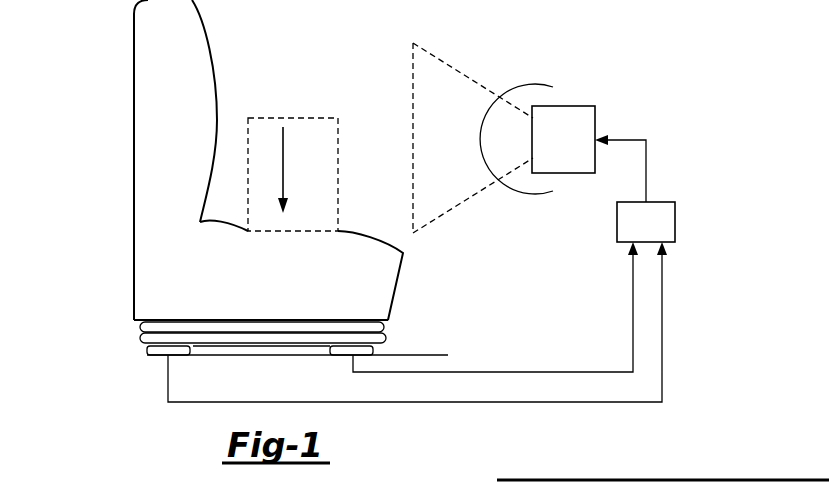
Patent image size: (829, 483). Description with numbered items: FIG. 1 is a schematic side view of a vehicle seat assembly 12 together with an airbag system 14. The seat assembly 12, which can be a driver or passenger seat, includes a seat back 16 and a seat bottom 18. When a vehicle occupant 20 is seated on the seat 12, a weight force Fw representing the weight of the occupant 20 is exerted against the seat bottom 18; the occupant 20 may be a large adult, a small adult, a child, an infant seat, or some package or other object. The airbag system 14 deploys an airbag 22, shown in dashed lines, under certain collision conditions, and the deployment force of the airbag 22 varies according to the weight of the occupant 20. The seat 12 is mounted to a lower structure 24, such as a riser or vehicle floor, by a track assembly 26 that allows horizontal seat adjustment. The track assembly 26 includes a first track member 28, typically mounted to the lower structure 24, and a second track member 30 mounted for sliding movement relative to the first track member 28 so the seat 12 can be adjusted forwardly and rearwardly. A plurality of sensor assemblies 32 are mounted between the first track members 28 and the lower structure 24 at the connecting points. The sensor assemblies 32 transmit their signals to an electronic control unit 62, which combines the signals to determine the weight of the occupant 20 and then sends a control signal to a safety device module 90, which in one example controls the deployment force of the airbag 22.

The vehicle seat assembly 12 is at (70, 183).
The airbag system 14 is at (492, 55).
The seat back 16 is at (134, 42).
The seat bottom 18 is at (368, 320).
The vehicle occupant 20 is at (295, 118).
The airbag 22 is at (412, 88).
The lower structure 24 is at (430, 355).
The track assembly 26 is at (100, 323).
The first track member 28 is at (140, 340).
The second track member 30 is at (388, 327).
The sensor assemblies 32 is at (163, 357).
The electronic control unit 62 is at (677, 226).
The safety device module 90 is at (588, 106).